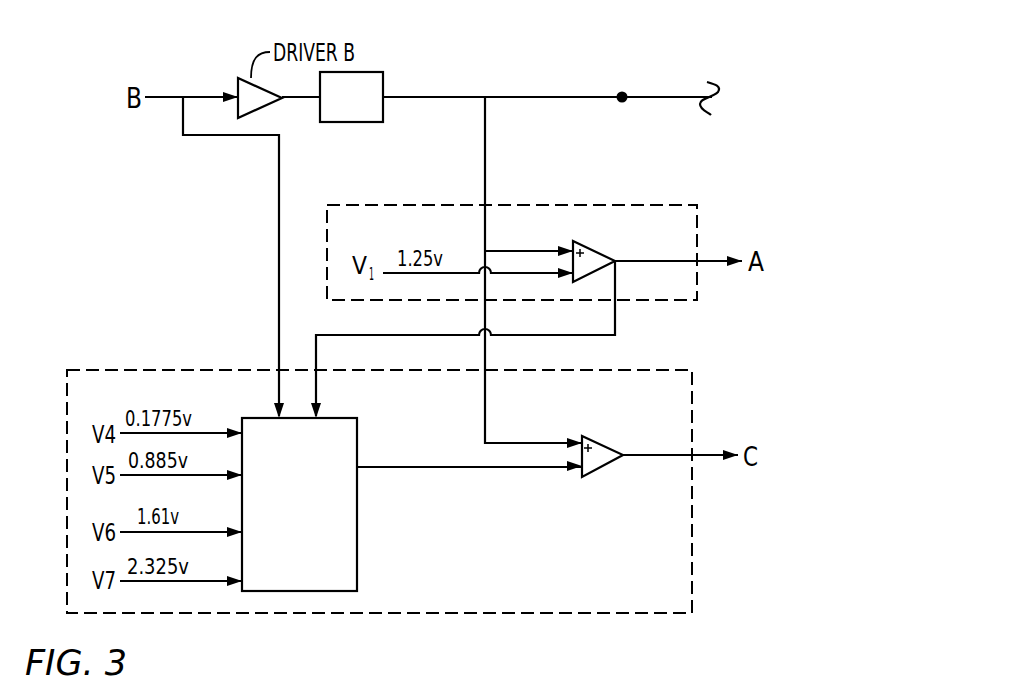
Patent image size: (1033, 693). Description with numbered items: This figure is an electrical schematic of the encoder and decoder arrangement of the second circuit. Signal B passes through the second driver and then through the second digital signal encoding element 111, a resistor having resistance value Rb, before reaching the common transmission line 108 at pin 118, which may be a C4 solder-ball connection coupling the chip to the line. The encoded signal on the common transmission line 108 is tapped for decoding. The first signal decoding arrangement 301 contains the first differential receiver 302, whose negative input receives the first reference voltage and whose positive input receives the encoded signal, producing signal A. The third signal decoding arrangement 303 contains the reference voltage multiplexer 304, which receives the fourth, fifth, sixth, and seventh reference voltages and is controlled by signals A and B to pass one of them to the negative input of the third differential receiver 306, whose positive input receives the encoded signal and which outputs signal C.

The common transmission line 108 is at (679, 96).
The second digital signal encoding element 111 is at (384, 76).
The pin 118 is at (622, 92).
The first signal decoding arrangement 301 is at (697, 228).
The first differential receiver 302 is at (592, 250).
The third signal decoding arrangement 303 is at (692, 409).
The reference voltage multiplexer 304 is at (346, 577).
The third differential receiver 306 is at (606, 465).